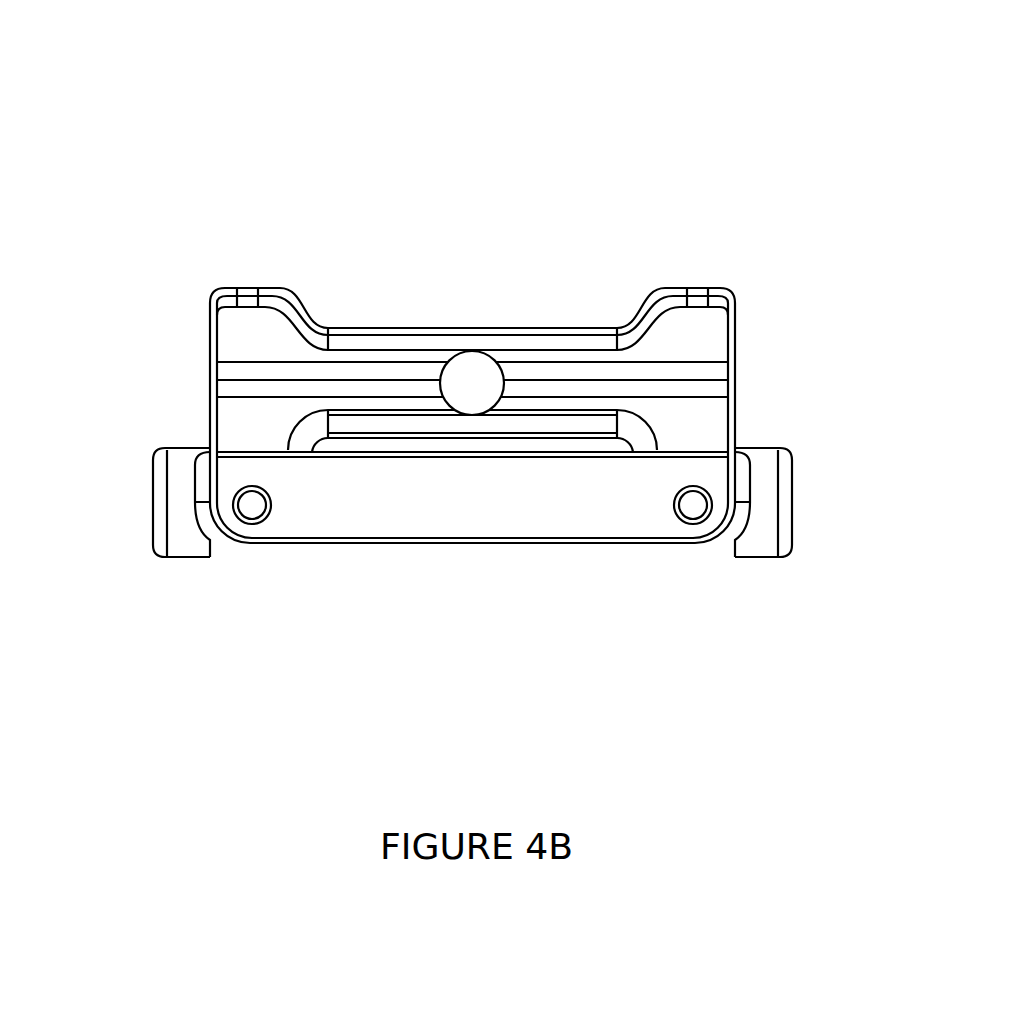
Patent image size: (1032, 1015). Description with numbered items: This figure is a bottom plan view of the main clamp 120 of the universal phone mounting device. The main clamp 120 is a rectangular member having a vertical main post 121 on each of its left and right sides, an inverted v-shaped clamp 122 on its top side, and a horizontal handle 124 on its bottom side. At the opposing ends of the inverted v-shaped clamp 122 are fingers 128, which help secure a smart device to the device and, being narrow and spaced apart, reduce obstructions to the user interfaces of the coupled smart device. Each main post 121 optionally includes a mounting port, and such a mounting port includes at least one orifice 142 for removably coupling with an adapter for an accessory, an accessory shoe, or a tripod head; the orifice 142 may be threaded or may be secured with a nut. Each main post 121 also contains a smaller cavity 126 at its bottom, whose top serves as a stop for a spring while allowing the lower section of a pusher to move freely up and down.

The main clamp 120 is at (703, 84).
The main post 121 is at (748, 447).
The inverted v-shaped clamp 122 is at (222, 386).
The horizontal handle 124 is at (463, 500).
The cavity 126 is at (241, 524).
The fingers 128 is at (242, 320).
The orifice 142 is at (466, 360).